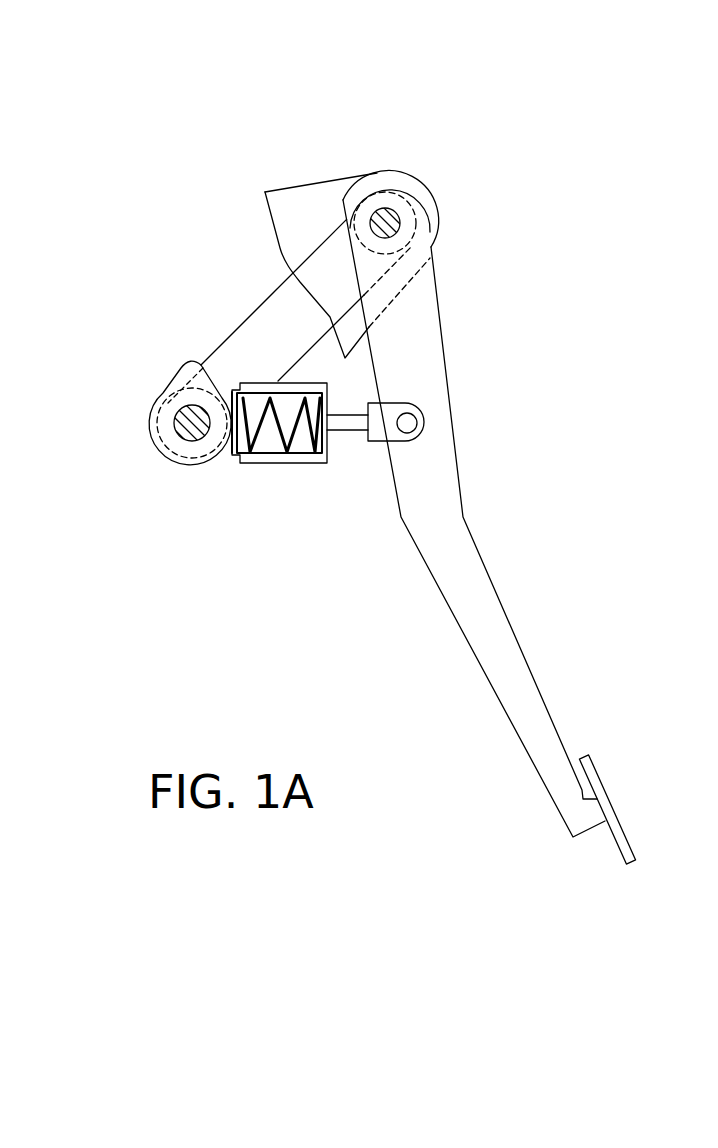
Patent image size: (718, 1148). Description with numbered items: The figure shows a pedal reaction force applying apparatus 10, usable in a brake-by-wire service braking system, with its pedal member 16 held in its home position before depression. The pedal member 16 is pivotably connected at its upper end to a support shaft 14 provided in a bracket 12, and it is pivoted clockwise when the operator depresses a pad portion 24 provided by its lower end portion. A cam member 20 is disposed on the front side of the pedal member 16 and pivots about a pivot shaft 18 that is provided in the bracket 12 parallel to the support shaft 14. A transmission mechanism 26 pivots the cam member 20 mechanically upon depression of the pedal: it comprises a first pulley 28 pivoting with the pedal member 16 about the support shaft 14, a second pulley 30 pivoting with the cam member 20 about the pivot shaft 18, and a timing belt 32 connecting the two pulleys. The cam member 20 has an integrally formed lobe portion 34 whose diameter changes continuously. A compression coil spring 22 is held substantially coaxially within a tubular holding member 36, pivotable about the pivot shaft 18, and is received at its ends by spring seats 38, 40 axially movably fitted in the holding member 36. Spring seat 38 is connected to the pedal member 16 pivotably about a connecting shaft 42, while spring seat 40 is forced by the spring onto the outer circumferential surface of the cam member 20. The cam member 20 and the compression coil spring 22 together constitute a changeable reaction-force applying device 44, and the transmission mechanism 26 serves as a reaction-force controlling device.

The pedal reaction force applying apparatus 10 is at (493, 128).
The bracket 12 is at (308, 197).
The support shaft 14 is at (400, 222).
The pedal member 16 is at (475, 575).
The pivot shaft 18 is at (180, 416).
The cam member 20 is at (168, 435).
The compression coil spring 22 is at (302, 448).
The pad portion 24 is at (603, 808).
The transmission mechanism 26 is at (182, 315).
The first pulley 28 is at (385, 206).
The second pulley 30 is at (187, 452).
The timing belt 32 is at (260, 303).
The lobe portion 34 is at (180, 365).
The tubular holding member 36 is at (267, 463).
The spring seat 38 is at (330, 447).
The spring seat 40 is at (233, 460).
The connecting shaft 42 is at (407, 423).
The changeable reaction-force applying device 44 is at (137, 485).